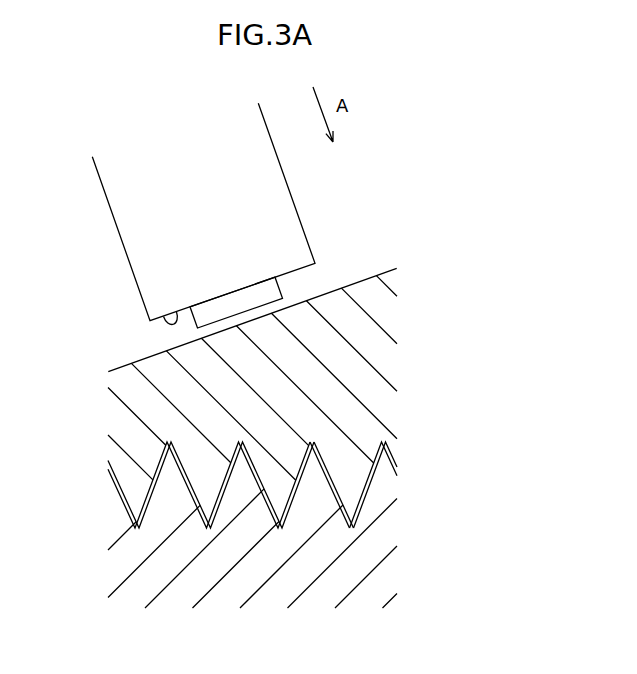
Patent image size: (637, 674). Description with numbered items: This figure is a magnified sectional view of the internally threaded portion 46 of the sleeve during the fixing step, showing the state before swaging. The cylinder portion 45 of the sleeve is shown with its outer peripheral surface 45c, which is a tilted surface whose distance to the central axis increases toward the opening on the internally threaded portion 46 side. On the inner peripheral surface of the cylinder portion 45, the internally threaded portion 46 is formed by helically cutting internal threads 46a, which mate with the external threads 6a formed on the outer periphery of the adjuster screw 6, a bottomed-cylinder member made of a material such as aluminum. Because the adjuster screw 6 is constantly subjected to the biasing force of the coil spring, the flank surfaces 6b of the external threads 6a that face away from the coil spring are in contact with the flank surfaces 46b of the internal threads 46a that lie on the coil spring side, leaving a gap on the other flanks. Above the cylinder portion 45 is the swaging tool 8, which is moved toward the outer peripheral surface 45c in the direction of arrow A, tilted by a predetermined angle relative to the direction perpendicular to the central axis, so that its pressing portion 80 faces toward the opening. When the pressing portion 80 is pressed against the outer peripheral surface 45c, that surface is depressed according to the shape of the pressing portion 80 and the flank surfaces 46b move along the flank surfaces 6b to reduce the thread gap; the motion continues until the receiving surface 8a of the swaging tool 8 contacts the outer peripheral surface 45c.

The swaging tool 8 is at (282, 170).
The receiving surface 8a is at (164, 315).
The pressing portion 80 is at (275, 278).
The cylinder portion 45 is at (276, 339).
The outer peripheral surface 45c is at (137, 362).
The internally threaded portion 46 is at (291, 413).
The internal threads 46a is at (347, 497).
The flank surfaces of the internal threads 46b is at (322, 474).
The adjuster screw 6 is at (281, 568).
The external threads 6a is at (312, 501).
The flank surfaces of the external threads 6b is at (338, 500).